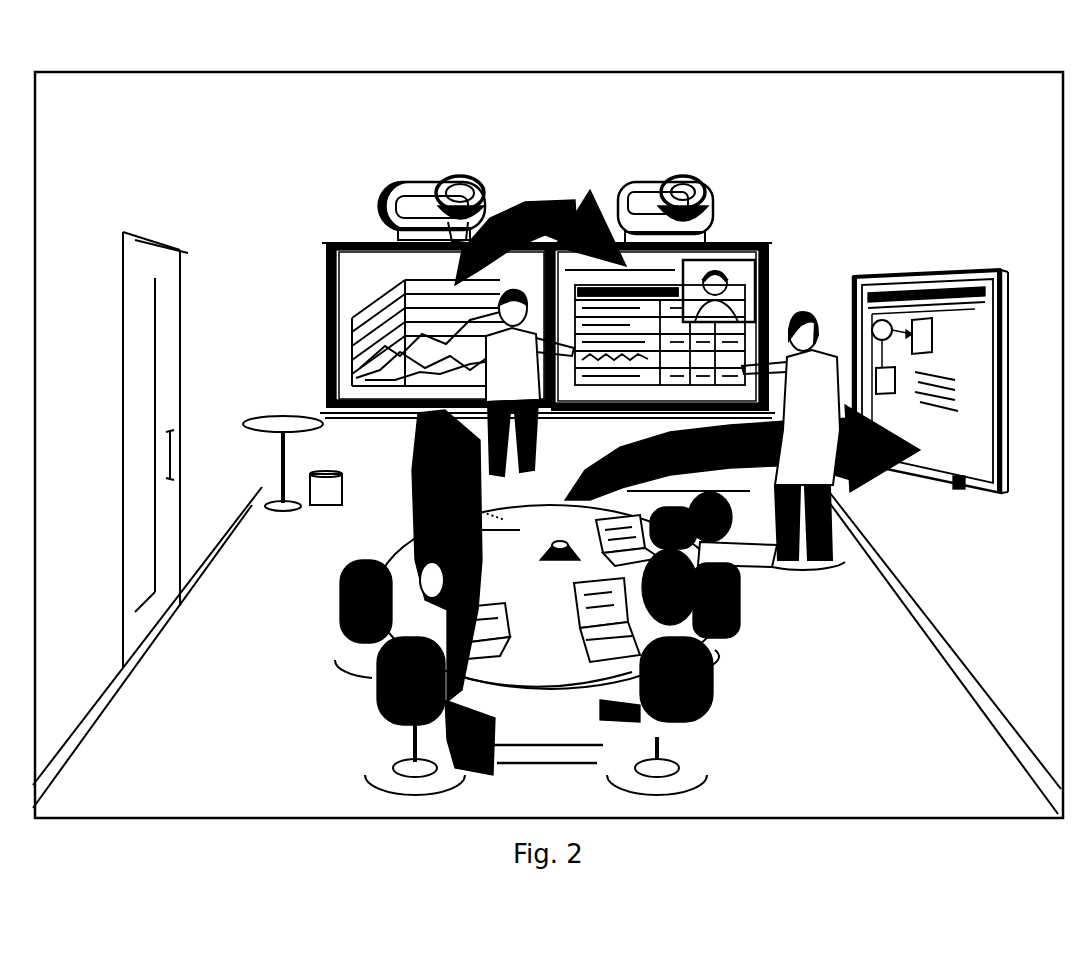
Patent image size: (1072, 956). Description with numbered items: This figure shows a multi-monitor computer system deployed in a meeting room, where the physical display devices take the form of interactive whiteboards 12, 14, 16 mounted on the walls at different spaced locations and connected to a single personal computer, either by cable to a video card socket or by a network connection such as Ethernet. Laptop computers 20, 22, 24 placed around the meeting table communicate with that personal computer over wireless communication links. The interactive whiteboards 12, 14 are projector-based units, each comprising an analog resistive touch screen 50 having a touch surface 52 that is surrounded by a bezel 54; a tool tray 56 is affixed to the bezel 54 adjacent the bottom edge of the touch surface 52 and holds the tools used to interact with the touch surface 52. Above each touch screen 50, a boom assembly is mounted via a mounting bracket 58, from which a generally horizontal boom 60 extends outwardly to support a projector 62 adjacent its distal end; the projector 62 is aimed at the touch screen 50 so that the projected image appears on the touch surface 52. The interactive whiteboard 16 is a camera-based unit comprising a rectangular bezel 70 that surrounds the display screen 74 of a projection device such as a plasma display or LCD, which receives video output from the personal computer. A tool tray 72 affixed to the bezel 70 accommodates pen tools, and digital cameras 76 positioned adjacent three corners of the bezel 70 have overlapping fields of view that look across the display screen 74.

The interactive whiteboard 12 is at (332, 200).
The interactive whiteboard 14 is at (750, 210).
The interactive whiteboard 16 is at (986, 518).
The laptop computer 20 is at (490, 645).
The laptop computer 22 is at (573, 602).
The laptop computer 24 is at (594, 522).
The analog resistive touch screen 50 is at (780, 252).
The touch surface 52 is at (366, 292).
The bezel 54 is at (327, 338).
The tool tray 56 is at (362, 416).
The mounting bracket 58 is at (415, 206).
The boom 60 is at (706, 196).
The projector 62 is at (463, 180).
The bezel 70 is at (925, 274).
The tool tray 72 is at (957, 484).
The display screen 74 is at (942, 400).
The digital cameras 76 is at (855, 274).